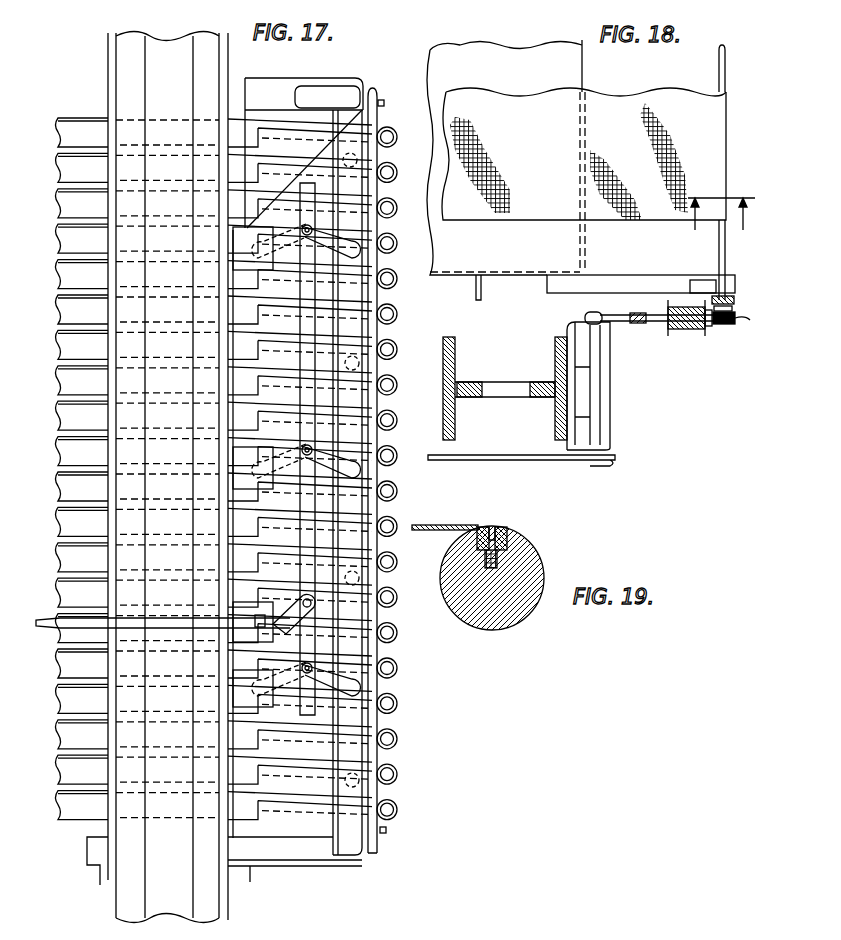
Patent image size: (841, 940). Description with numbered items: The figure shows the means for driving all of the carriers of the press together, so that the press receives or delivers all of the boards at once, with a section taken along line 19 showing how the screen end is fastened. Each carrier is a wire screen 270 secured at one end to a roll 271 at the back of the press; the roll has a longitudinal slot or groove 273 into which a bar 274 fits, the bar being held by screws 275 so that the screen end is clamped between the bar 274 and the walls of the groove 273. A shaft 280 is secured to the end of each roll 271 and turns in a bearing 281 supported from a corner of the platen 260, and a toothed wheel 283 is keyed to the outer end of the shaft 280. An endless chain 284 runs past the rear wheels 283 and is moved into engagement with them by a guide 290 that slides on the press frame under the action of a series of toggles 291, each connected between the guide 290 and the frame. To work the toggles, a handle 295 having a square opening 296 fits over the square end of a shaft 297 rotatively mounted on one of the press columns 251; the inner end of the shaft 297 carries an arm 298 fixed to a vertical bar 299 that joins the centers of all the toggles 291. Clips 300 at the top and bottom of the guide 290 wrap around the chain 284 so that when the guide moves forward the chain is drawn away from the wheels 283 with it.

In FIG. 17, the press column 251 is at (215, 902).
In FIG. 17, the guide 290 is at (386, 830).
In FIG. 18, the guide 290 is at (680, 324).
In FIG. 17, the toggle 291 is at (292, 682).
In FIG. 17, the handle 295 is at (62, 632).
In FIG. 18, the handle 295 is at (507, 462).
In FIG. 17, the square opening 296 is at (271, 625).
In FIG. 18, the shaft 297 is at (602, 408).
In FIG. 17, the arm 298 is at (288, 609).
In FIG. 18, the arm 298 is at (625, 324).
In FIG. 17, the vertical bar 299 is at (278, 500).
In FIG. 17, the clip 300 is at (384, 103).
In FIG. 18, the platen 260 is at (540, 222).
In FIG. 18, the wire screen 270 is at (660, 82).
In FIG. 19, the wire screen 270 is at (452, 527).
In FIG. 18, the roll 271 is at (717, 58).
In FIG. 19, the roll 271 is at (523, 558).
In FIG. 19, the longitudinal slot or groove 273 is at (512, 532).
In FIG. 19, the bar 274 is at (505, 527).
In FIG. 19, the screw 275 is at (497, 512).
In FIG. 18, the shaft 280 is at (720, 258).
In FIG. 18, the bearing 281 is at (735, 286).
In FIG. 18, the toothed wheel 283 is at (736, 325).
In FIG. 18, the endless chain 284 is at (711, 327).
In FIG. 18, the section line 19- 19 is at (720, 225).